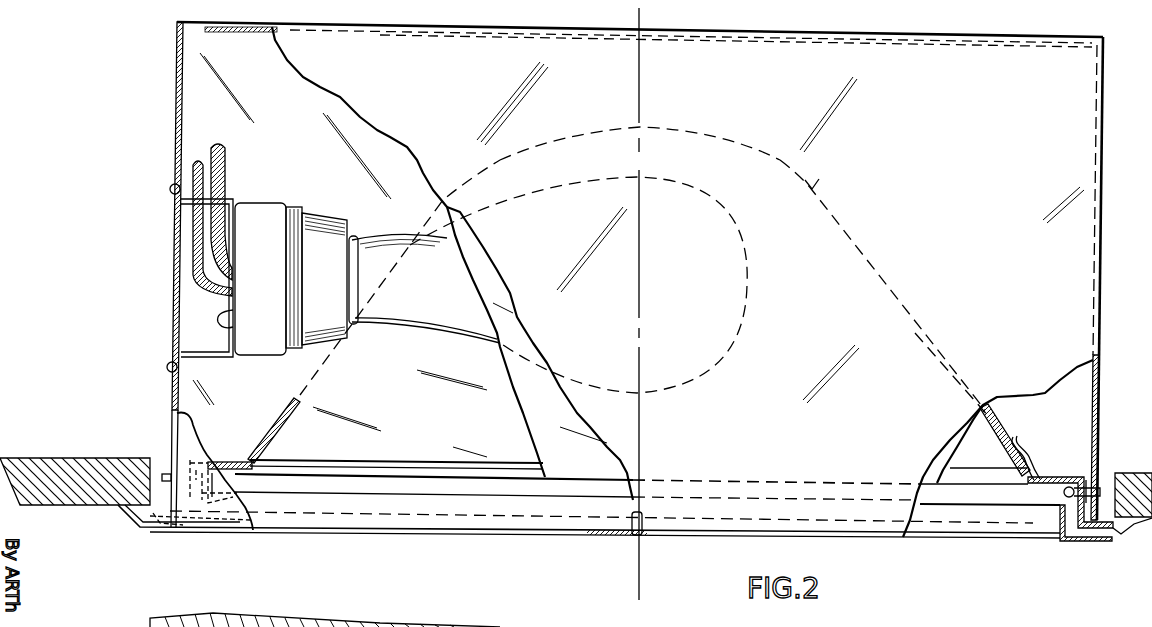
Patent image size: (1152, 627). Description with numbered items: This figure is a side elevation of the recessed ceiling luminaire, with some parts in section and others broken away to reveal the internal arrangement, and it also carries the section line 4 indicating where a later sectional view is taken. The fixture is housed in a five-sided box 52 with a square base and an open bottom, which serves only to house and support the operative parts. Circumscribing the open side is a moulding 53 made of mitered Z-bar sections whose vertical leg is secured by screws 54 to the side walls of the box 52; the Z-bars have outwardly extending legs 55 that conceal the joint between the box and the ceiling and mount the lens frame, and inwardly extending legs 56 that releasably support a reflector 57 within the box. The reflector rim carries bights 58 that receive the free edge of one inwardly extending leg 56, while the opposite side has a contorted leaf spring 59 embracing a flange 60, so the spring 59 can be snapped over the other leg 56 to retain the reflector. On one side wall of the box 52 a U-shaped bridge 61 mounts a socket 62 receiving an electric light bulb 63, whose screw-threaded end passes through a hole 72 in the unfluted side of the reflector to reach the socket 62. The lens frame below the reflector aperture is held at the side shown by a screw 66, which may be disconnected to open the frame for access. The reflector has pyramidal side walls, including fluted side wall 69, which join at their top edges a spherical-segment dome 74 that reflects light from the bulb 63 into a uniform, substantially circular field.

The section line 4- 4 is at (632, 15).
The box 52 is at (1027, 151).
The moulding 53 is at (130, 513).
The screws 54 is at (173, 453).
The outwardly extending legs 55 is at (185, 522).
The inwardly extending legs 56 is at (210, 462).
The reflector 57 is at (835, 160).
The bights 58 is at (250, 458).
The contorted leaf spring 59 is at (1023, 443).
The flange 60 is at (1020, 495).
The U-shaped bridge 61 is at (198, 358).
The socket 62 is at (257, 203).
The electric light bulb 63 is at (753, 290).
The screw 66 is at (639, 536).
The side wall 69 is at (995, 423).
The hole 72 is at (350, 338).
The dome 74 is at (617, 126).